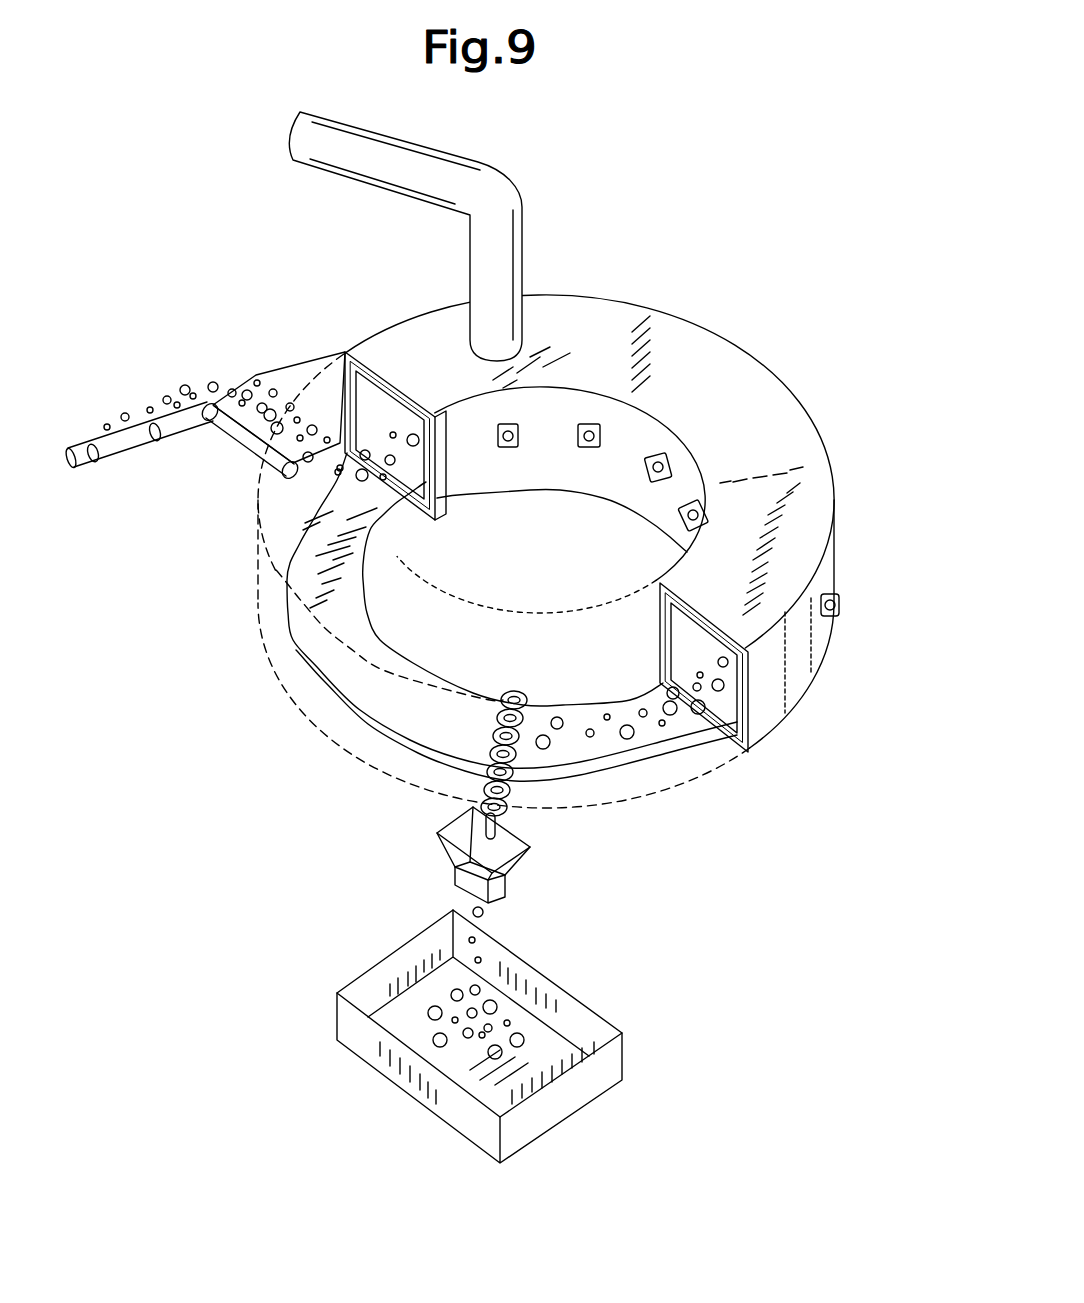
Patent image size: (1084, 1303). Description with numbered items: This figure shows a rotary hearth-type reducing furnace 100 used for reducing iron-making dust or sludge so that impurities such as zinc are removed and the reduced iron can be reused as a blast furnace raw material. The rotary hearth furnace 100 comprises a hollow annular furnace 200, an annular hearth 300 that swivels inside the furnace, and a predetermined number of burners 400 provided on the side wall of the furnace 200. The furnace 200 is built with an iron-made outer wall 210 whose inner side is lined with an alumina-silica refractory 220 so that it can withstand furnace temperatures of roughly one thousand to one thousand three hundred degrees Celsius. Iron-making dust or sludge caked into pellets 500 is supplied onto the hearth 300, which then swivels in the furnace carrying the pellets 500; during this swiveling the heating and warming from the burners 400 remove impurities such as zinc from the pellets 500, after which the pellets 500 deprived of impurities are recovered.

The rotary hearth-type reducing furnace 100 is at (678, 280).
The hollow annular furnace 200 is at (555, 616).
The outer wall 210 is at (745, 717).
The alumina-silica refractory 220 is at (564, 659).
The annular hearth 300 is at (617, 757).
The burner 400 is at (683, 517).
The pellet 500 is at (340, 445).